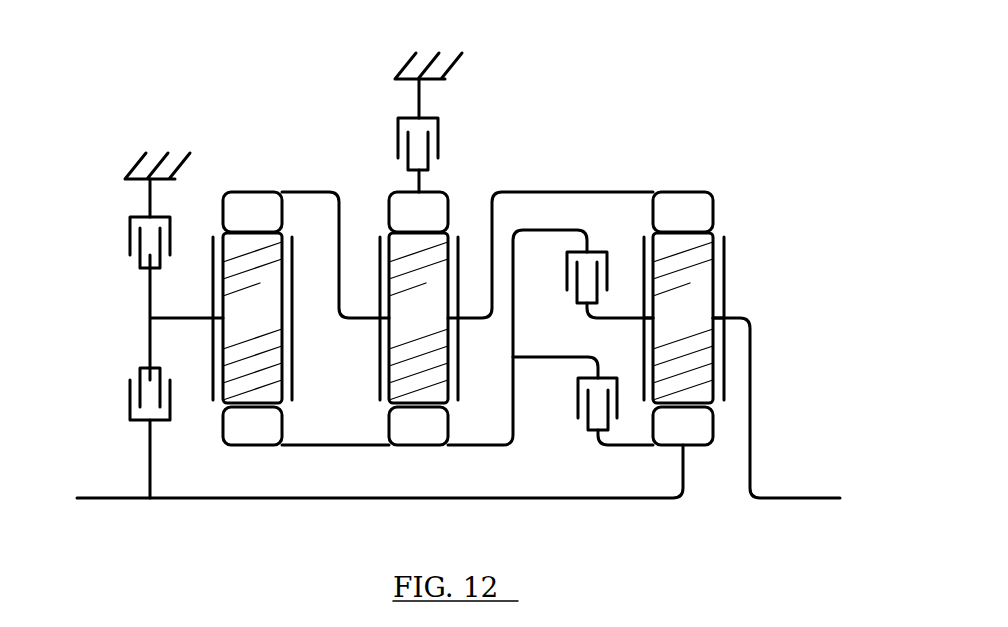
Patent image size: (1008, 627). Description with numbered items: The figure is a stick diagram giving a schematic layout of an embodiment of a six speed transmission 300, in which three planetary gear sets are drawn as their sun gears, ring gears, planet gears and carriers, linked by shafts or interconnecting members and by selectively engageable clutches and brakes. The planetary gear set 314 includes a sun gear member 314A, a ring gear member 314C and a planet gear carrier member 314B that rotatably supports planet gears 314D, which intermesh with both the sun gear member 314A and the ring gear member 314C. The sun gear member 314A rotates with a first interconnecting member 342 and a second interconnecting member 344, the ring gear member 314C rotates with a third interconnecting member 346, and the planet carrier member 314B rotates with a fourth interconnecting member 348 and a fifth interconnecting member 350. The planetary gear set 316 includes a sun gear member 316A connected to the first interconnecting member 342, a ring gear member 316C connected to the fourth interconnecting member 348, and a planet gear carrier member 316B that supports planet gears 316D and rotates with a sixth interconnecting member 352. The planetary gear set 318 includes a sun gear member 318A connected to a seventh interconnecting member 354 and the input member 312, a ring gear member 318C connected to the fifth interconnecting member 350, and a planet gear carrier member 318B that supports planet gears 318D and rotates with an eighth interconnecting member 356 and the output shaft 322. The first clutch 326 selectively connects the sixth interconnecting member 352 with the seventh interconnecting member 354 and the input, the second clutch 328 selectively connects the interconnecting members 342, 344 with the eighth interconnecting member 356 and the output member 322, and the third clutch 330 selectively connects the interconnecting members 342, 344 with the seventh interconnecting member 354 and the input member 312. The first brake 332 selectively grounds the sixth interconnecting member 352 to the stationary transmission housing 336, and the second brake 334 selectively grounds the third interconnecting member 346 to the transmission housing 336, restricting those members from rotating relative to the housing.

The six speed transmission 300 is at (742, 116).
The input member 312 is at (113, 499).
The planetary gear set 314 is at (432, 349).
The sun gear member 314A is at (411, 428).
The planet gear carrier member 314B is at (460, 390).
The ring gear member 314C is at (406, 208).
The planet gears 314D is at (444, 330).
The planetary gear set 316 is at (276, 349).
The sun gear member 316A is at (242, 423).
The planet gear carrier member 316B is at (295, 375).
The ring gear member 316C is at (242, 205).
The planet gears 316D is at (278, 330).
The planetary gear set 318 is at (711, 349).
The sun gear member 318A is at (669, 423).
The planet gear carrier member 318B is at (724, 268).
The ring gear member 318C is at (682, 205).
The planet gears 318D is at (658, 330).
The output member or shaft 322 is at (804, 500).
The first clutch 326 is at (130, 405).
The second clutch 328 is at (567, 268).
The third clutch 330 is at (577, 410).
The first brake 332 is at (130, 229).
The second brake 334 is at (398, 128).
The transmission housing 336 is at (137, 163).
The first shaft or interconnecting member 342 is at (325, 445).
The second shaft or interconnecting member 344 is at (521, 356).
The third shaft or interconnecting member 346 is at (418, 184).
The fourth shaft or interconnecting member 348 is at (305, 191).
The fifth shaft or interconnecting member 350 is at (595, 191).
The sixth shaft or interconnecting member 352 is at (150, 300).
The seventh shaft or interconnecting member 354 is at (628, 448).
The eighth shaft or interconnecting member 356 is at (628, 317).